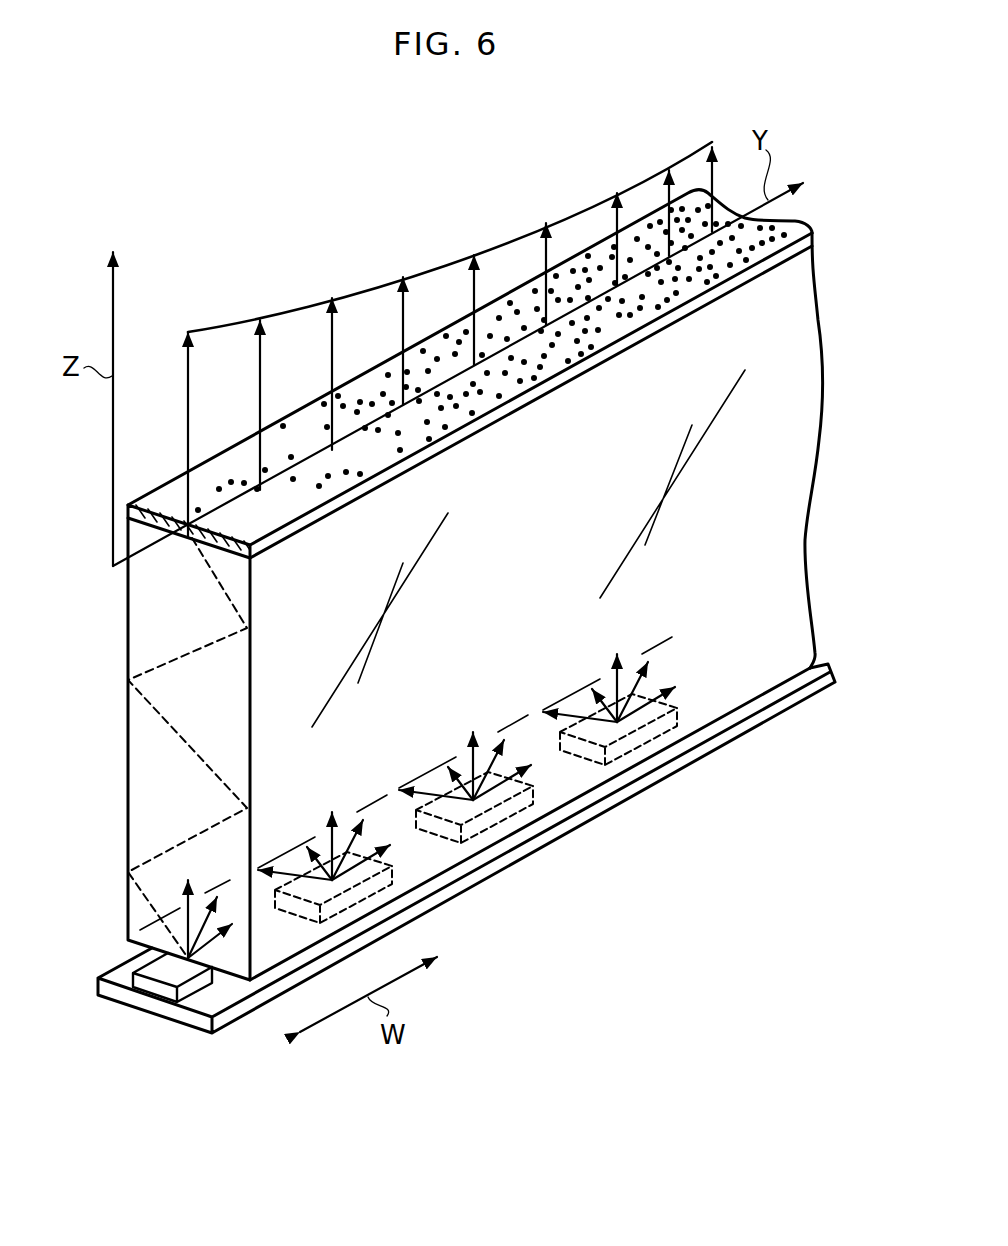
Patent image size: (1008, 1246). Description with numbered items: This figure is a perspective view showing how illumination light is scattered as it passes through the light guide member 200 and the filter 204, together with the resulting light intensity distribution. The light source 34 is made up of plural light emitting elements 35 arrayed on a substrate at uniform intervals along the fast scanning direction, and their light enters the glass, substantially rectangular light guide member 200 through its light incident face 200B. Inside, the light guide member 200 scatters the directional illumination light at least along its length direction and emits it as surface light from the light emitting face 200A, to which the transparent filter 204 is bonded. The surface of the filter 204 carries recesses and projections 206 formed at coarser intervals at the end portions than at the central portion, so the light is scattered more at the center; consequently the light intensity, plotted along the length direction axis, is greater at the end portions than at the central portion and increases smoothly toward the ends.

The light guide member 200 is at (123, 758).
The light emitting face 200A is at (233, 555).
The light incident face 200B is at (130, 948).
The filter 204 is at (146, 493).
The recesses and projections 206 is at (777, 240).
The light source 34 is at (135, 1015).
The light emitting elements 35 is at (183, 990).